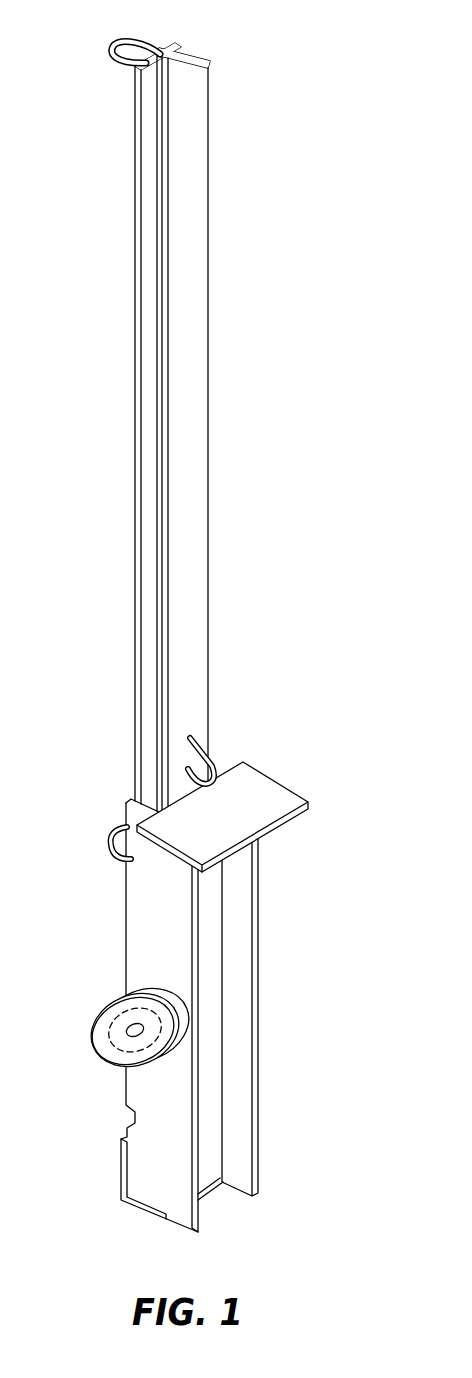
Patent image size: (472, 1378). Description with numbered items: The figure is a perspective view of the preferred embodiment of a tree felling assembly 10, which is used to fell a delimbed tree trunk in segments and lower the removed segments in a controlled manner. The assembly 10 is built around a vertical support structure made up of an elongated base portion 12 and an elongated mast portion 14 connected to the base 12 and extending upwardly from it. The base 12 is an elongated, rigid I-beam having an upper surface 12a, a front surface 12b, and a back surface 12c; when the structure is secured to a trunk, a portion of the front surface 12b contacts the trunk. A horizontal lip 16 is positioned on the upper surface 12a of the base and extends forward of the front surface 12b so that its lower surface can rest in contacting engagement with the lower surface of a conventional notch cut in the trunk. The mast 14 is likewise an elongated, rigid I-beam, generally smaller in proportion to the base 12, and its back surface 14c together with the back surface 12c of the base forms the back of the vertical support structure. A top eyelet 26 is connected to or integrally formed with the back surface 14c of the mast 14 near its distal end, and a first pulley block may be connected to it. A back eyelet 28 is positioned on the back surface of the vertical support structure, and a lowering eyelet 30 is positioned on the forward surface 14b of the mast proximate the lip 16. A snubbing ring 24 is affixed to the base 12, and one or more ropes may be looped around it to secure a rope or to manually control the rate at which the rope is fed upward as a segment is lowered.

The tree felling assembly 10 is at (207, 637).
The base portion 12 is at (191, 981).
The upper surface 12a is at (125, 803).
The front surface 12b is at (262, 931).
The back surface 12c is at (126, 905).
The mast portion 14 is at (176, 427).
The forward surface 14b is at (190, 540).
The back surface 14c is at (133, 529).
The horizontal lip 16 is at (283, 793).
The snubbing ring 24 is at (112, 1056).
The top eyelet 26 is at (106, 55).
The back eyelet 28 is at (107, 843).
The lowering eyelet 30 is at (218, 769).